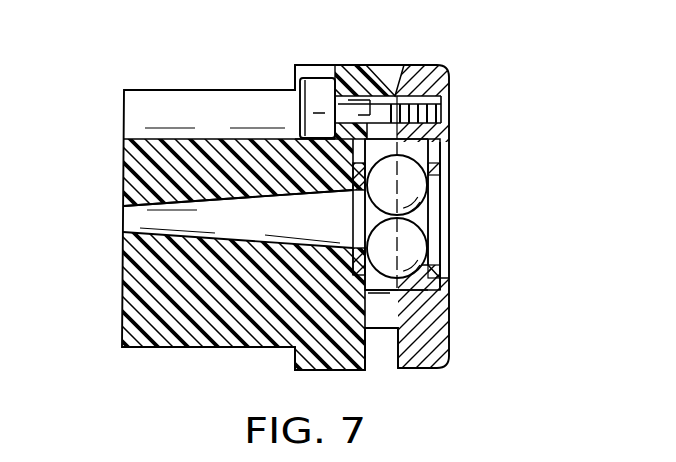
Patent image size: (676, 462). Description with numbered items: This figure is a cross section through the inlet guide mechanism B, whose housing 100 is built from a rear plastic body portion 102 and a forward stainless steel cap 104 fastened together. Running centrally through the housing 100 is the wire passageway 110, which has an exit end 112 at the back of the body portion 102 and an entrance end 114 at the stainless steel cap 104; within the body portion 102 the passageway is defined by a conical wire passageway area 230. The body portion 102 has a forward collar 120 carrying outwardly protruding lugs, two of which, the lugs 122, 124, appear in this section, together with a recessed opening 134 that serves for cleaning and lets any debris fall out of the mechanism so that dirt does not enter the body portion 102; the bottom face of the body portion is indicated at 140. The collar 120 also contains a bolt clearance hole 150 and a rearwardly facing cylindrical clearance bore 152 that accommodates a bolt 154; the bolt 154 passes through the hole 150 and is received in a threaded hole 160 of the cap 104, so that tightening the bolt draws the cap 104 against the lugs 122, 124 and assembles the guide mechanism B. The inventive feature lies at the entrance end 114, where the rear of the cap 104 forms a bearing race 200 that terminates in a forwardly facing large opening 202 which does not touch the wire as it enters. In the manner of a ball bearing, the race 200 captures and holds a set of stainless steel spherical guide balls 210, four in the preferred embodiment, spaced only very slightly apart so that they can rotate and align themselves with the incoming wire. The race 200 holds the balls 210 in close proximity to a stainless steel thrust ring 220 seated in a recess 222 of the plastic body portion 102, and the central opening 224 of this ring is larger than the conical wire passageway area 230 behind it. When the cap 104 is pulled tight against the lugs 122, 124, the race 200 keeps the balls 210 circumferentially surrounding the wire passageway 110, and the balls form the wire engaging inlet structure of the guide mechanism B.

The housing 100 is at (215, 72).
The rear plastic body portion 102 is at (122, 315).
The forward stainless steel cap 104 is at (449, 343).
The wire passageway 110 is at (232, 226).
The exit end 112 is at (128, 220).
The entrance end 114 is at (440, 215).
The forward collar 120 is at (328, 370).
The lug 122 is at (377, 72).
The lug 124 is at (383, 308).
The recessed opening 134 is at (378, 353).
The bottom face 140 is at (147, 343).
The bolt clearance hole 150 is at (420, 66).
The rearwardly facing cylindrical clearance bore 152 is at (157, 100).
The bolt 154 is at (322, 90).
The threaded hole 160 is at (440, 117).
The bearing race 200 is at (413, 290).
The forwardly facing large opening 202 is at (433, 207).
The stainless steel spherical guide ball 210 is at (412, 186).
The stainless steel thrust ring 220 is at (362, 260).
The recess 222 is at (367, 183).
The central opening 224 is at (358, 248).
The conical wire passageway area 230 is at (263, 208).
The inlet guide mechanism B is at (475, 62).